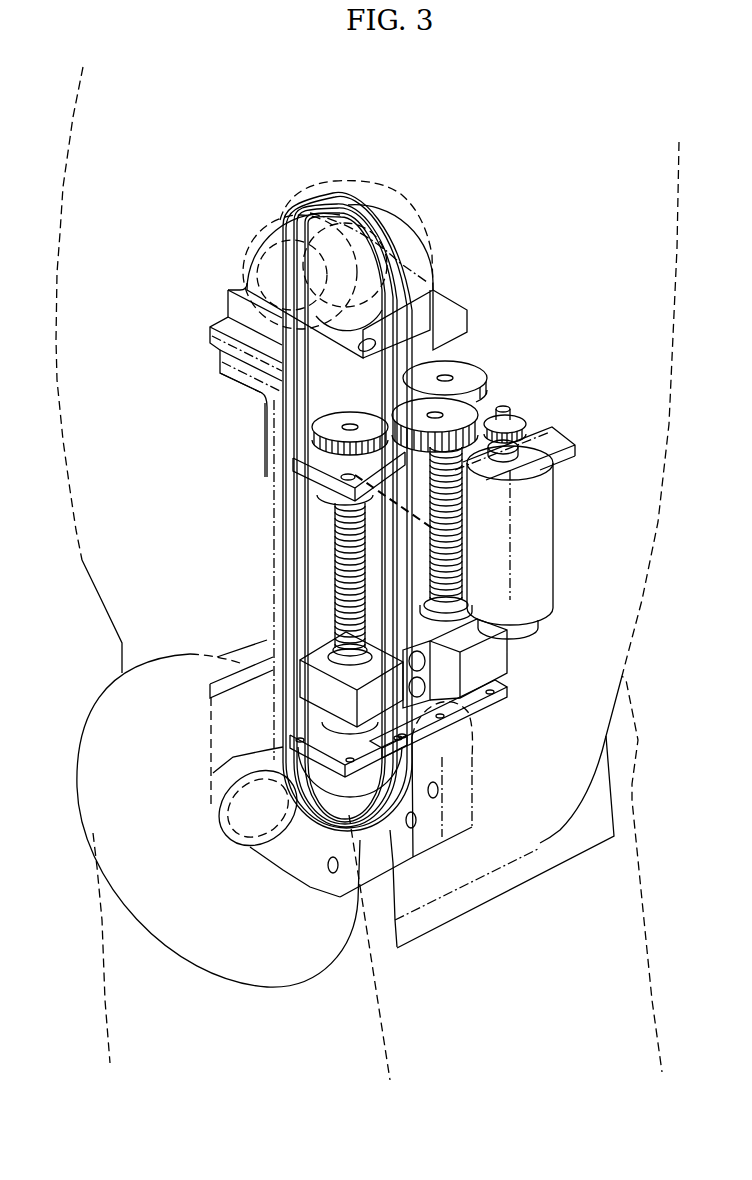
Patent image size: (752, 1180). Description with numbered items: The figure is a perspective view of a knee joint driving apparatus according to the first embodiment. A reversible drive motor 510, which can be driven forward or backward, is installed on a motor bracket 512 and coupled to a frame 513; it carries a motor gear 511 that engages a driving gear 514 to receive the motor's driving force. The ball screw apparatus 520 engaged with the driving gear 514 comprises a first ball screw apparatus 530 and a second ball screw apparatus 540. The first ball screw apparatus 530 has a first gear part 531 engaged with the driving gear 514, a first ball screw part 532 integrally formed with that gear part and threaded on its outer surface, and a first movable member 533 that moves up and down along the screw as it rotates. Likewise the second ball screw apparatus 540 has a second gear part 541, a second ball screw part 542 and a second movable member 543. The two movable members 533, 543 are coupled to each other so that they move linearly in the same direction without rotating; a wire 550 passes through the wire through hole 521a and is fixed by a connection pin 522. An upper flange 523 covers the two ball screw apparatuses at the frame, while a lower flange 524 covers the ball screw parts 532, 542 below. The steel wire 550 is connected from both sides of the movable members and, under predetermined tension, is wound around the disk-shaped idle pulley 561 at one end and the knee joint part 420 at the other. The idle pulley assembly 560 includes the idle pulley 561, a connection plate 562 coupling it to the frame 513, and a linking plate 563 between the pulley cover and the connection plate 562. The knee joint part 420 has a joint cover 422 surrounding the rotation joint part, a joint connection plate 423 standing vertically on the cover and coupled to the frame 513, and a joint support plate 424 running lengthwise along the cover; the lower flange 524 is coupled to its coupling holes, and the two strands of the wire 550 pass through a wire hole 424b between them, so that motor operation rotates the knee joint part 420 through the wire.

The knee joint part 420 is at (500, 782).
The joint cover 422 is at (207, 728).
The joint connection plate 423 is at (230, 648).
The joint support plate 424 is at (207, 767).
The wire hole 424b is at (465, 735).
The drive motor 510 is at (548, 528).
The motor gear 511 is at (525, 413).
The motor bracket 512 is at (550, 440).
The frame 513 is at (272, 497).
The driving gear 514 is at (500, 410).
The ball screw apparatus 520 is at (496, 352).
The wire through hole 521a is at (543, 610).
The connection pin 522 is at (435, 660).
The upper flange 523 is at (333, 440).
The lower flange 524 is at (500, 700).
The first ball screw apparatus 530 is at (322, 600).
The first gear part 531 is at (330, 428).
The first ball screw part 532 is at (310, 680).
The first movable member 533 is at (210, 686).
The second ball screw apparatus 540 is at (478, 513).
The second gear part 541 is at (447, 345).
The second ball screw part 542 is at (462, 565).
The second movable member 543 is at (492, 642).
The wire 550 is at (268, 563).
The idle pulley assembly 560 is at (441, 214).
The idle pulley 561 is at (372, 228).
The connection plate 562 is at (266, 410).
The linking plate 563 is at (338, 192).